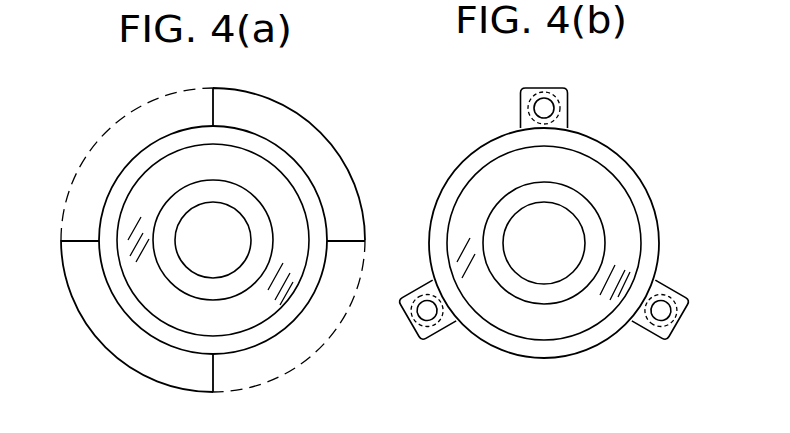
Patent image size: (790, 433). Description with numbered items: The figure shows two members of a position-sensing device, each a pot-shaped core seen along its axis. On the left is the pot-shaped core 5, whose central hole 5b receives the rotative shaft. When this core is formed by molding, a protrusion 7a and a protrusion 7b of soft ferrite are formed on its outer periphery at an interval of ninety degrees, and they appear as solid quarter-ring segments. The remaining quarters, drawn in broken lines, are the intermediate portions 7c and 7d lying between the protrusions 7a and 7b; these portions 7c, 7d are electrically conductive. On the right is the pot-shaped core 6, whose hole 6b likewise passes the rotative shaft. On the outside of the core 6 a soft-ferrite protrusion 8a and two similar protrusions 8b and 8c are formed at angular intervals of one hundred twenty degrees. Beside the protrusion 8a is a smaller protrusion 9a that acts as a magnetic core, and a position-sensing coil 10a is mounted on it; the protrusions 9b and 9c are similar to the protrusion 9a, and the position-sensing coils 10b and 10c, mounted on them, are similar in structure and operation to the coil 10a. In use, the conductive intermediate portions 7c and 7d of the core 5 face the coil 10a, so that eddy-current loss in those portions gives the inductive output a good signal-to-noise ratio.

The pot-shaped core 5 is at (272, 340).
The hole 5b is at (248, 227).
The protrusion 7a is at (320, 132).
The protrusion 7b is at (110, 353).
The intermediate portion 7c is at (327, 337).
The intermediate portion 7d is at (110, 128).
The pot-shaped core 6 is at (660, 238).
The hole 6b is at (570, 230).
The protrusion 8a is at (568, 120).
The protrusion 8b is at (656, 290).
The protrusion 8c is at (445, 324).
The protrusion 9a is at (543, 100).
The protrusion 9b is at (672, 302).
The protrusion 9c is at (408, 320).
The position-sensing coil 10a is at (567, 93).
The position-sensing coil 10b is at (662, 340).
The position-sensing coil 10c is at (440, 330).